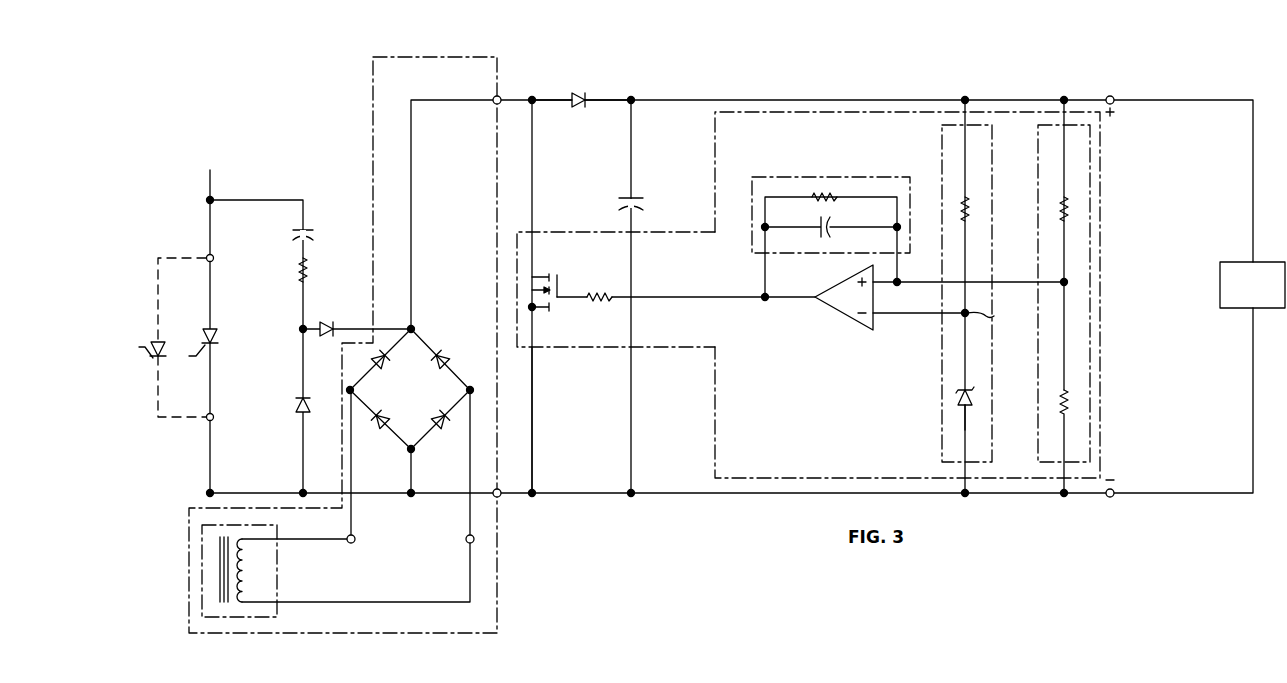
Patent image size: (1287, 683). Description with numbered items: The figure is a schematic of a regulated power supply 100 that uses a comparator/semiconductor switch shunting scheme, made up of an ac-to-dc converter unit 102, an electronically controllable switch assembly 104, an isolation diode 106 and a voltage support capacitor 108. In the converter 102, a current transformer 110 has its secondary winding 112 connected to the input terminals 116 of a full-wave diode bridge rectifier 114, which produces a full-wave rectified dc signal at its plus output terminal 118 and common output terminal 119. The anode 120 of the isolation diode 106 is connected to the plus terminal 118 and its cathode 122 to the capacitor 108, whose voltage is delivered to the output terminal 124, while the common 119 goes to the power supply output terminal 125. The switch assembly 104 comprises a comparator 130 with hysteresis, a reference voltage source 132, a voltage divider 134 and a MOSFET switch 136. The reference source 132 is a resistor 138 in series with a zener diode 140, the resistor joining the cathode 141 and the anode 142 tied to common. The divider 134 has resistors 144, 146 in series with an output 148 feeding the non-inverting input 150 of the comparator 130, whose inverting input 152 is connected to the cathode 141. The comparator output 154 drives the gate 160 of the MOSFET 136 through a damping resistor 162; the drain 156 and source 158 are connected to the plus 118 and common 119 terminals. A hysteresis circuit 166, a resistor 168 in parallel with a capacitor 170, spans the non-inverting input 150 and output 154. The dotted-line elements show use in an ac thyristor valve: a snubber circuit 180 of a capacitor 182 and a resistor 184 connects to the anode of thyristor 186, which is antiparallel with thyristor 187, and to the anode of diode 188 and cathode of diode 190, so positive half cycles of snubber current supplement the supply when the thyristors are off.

The regulated power supply 100 is at (772, 528).
The ac-to-dc converter unit 102 is at (411, 53).
The electronically controllable switch assembly 104 is at (1100, 128).
The isolation diode 106 is at (582, 93).
The voltage support capacitor 108 is at (620, 205).
The current transformer 110 is at (278, 532).
The secondary winding 112 is at (242, 578).
The full-wave diode bridge rectifier 114 is at (426, 400).
The input terminals 116 is at (465, 537).
The plus output terminal 118 is at (494, 95).
The common output terminal 119 is at (500, 498).
The anode 120 is at (560, 108).
The cathode 122 is at (602, 108).
The output terminal 124 is at (1111, 95).
The power supply output terminal 125 is at (1111, 498).
The comparator 130 is at (835, 310).
The reference voltage source 132 is at (980, 208).
The voltage divider 134 is at (1037, 166).
The MOSFET switch 136 is at (558, 286).
The resistor 138 is at (962, 200).
The zener diode 140 is at (957, 404).
The cathode 141 is at (968, 384).
The anode 142 is at (966, 418).
The resistor 144 is at (1068, 211).
The resistor 146 is at (1068, 411).
The output 148 is at (1058, 277).
The non-inverting input 150 is at (884, 284).
The inverting input 152 is at (880, 315).
The output 154 is at (812, 295).
The drain 156 is at (536, 222).
The source 158 is at (536, 440).
The gate 160 is at (564, 300).
The damping resistor 162 is at (600, 295).
The hysteresis circuit 166 is at (772, 170).
The resistor 168 is at (814, 191).
The capacitor 170 is at (826, 217).
The snubber circuit 180 is at (272, 250).
The capacitor 182 is at (318, 238).
The resistor 184 is at (316, 275).
The thyristor 186 is at (221, 340).
The thyristor 187 is at (168, 346).
The diode 188 is at (327, 323).
The diode 190 is at (297, 403).